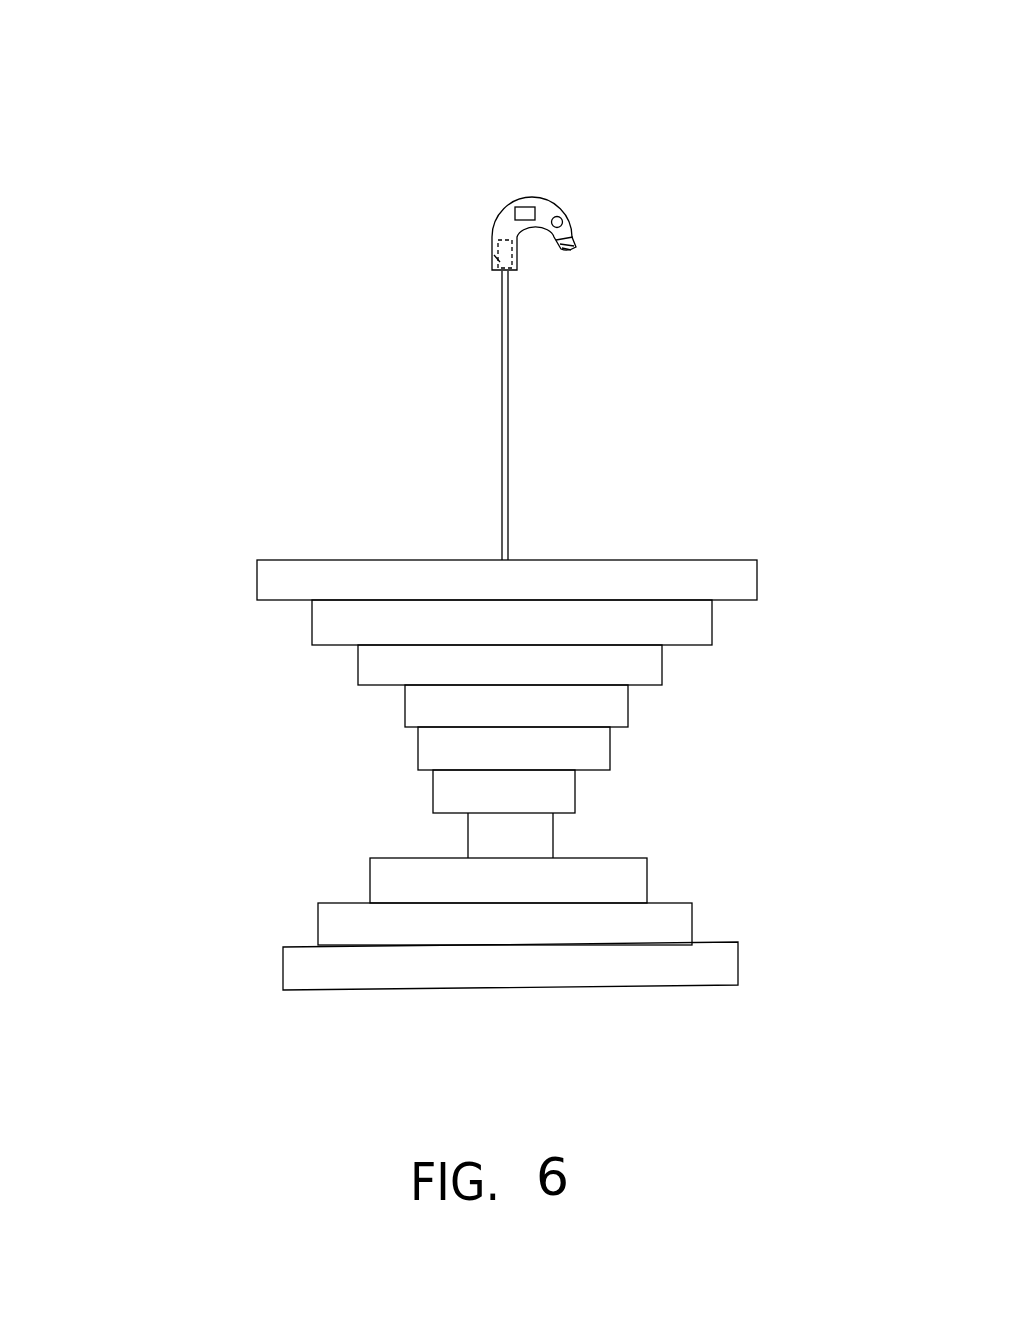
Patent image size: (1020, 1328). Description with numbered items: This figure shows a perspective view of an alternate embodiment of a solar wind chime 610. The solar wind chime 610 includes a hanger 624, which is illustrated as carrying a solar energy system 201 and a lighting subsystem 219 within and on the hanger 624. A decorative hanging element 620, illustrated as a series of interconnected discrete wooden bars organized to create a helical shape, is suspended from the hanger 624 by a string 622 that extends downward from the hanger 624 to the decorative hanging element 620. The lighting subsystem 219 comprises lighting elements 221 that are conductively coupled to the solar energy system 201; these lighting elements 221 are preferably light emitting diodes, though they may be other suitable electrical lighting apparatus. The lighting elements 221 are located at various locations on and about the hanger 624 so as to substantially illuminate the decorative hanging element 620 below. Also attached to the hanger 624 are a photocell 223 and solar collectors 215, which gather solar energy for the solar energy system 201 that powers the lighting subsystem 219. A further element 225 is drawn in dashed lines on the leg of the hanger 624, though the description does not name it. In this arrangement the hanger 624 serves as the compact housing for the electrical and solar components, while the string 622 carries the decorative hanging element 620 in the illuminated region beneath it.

The solar wind chime 610 is at (205, 227).
The decorative hanging element 620 is at (640, 850).
The string 622 is at (508, 440).
The hanger 624 is at (511, 188).
The solar collectors 215 is at (532, 206).
The photocell 223 is at (563, 218).
The recess 225 is at (498, 240).
The solar energy system 201 is at (490, 262).
The lighting subsystem 219 is at (590, 238).
The lighting elements 221 is at (572, 252).